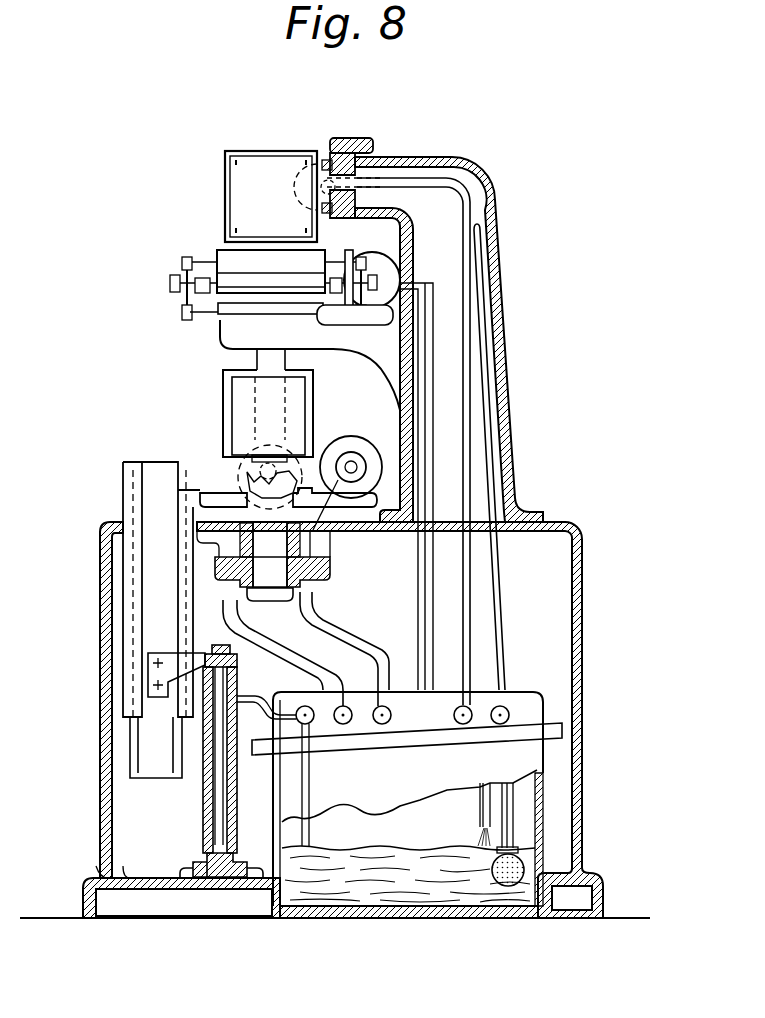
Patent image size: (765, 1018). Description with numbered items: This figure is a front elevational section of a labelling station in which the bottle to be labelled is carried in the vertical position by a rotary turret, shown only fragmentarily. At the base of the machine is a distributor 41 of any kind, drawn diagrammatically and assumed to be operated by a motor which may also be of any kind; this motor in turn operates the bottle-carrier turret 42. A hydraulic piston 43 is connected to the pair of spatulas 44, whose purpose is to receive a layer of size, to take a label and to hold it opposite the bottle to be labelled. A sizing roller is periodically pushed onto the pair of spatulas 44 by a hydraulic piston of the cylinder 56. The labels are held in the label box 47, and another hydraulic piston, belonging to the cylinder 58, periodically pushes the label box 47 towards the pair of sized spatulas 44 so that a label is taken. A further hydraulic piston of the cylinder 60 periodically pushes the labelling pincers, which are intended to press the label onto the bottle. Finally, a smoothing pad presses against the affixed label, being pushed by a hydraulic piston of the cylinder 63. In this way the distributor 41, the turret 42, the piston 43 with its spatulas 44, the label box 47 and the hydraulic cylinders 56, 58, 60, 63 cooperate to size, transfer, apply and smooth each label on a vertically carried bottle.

The distributor 41 is at (527, 702).
The bottle-carrier turret 42 is at (217, 500).
The hydraulic piston 43 is at (223, 843).
The pair of spatulas 44 is at (240, 368).
The label box 47 is at (232, 151).
The cylinder 56 is at (378, 262).
The cylinder 58 is at (325, 158).
The cylinder 60 is at (260, 447).
The cylinder 63 is at (347, 440).